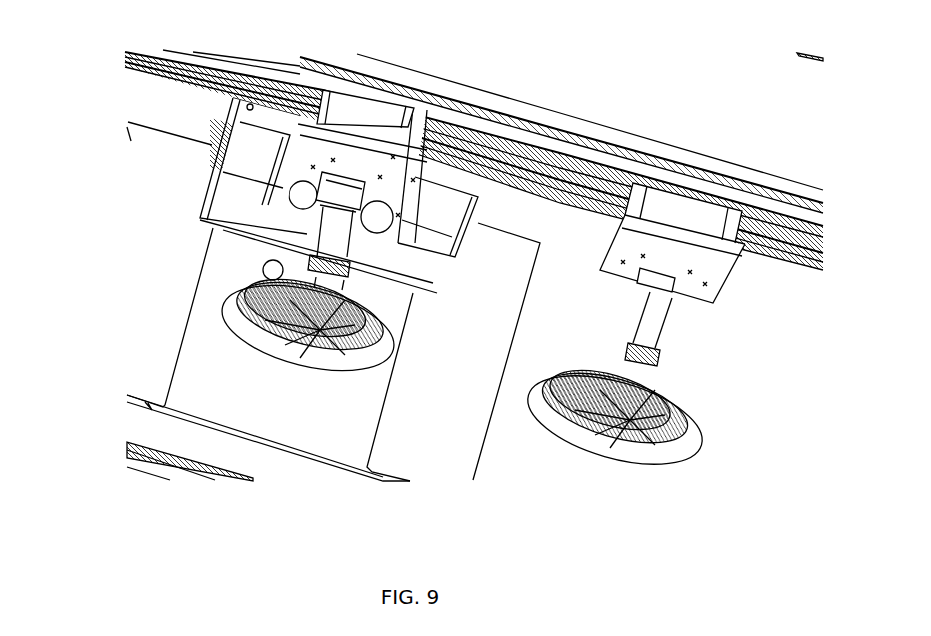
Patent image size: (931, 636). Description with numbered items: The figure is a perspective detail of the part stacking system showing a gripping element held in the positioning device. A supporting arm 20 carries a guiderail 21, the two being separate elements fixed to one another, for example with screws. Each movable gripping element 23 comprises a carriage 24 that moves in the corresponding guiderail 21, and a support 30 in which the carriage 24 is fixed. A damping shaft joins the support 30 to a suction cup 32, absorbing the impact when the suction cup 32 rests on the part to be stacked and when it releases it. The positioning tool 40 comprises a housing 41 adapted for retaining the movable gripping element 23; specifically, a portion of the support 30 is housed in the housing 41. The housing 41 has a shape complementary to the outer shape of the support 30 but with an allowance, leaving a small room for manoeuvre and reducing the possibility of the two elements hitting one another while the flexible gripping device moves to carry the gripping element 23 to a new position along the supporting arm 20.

The supporting arm 20 is at (533, 103).
The guiderail 21 is at (780, 243).
The movable gripping element 23 is at (373, 292).
The carriage 24 is at (373, 117).
The support 30 is at (416, 184).
The suction cup 32 is at (277, 340).
The positioning tool 40 is at (463, 453).
The housing 41 is at (280, 210).